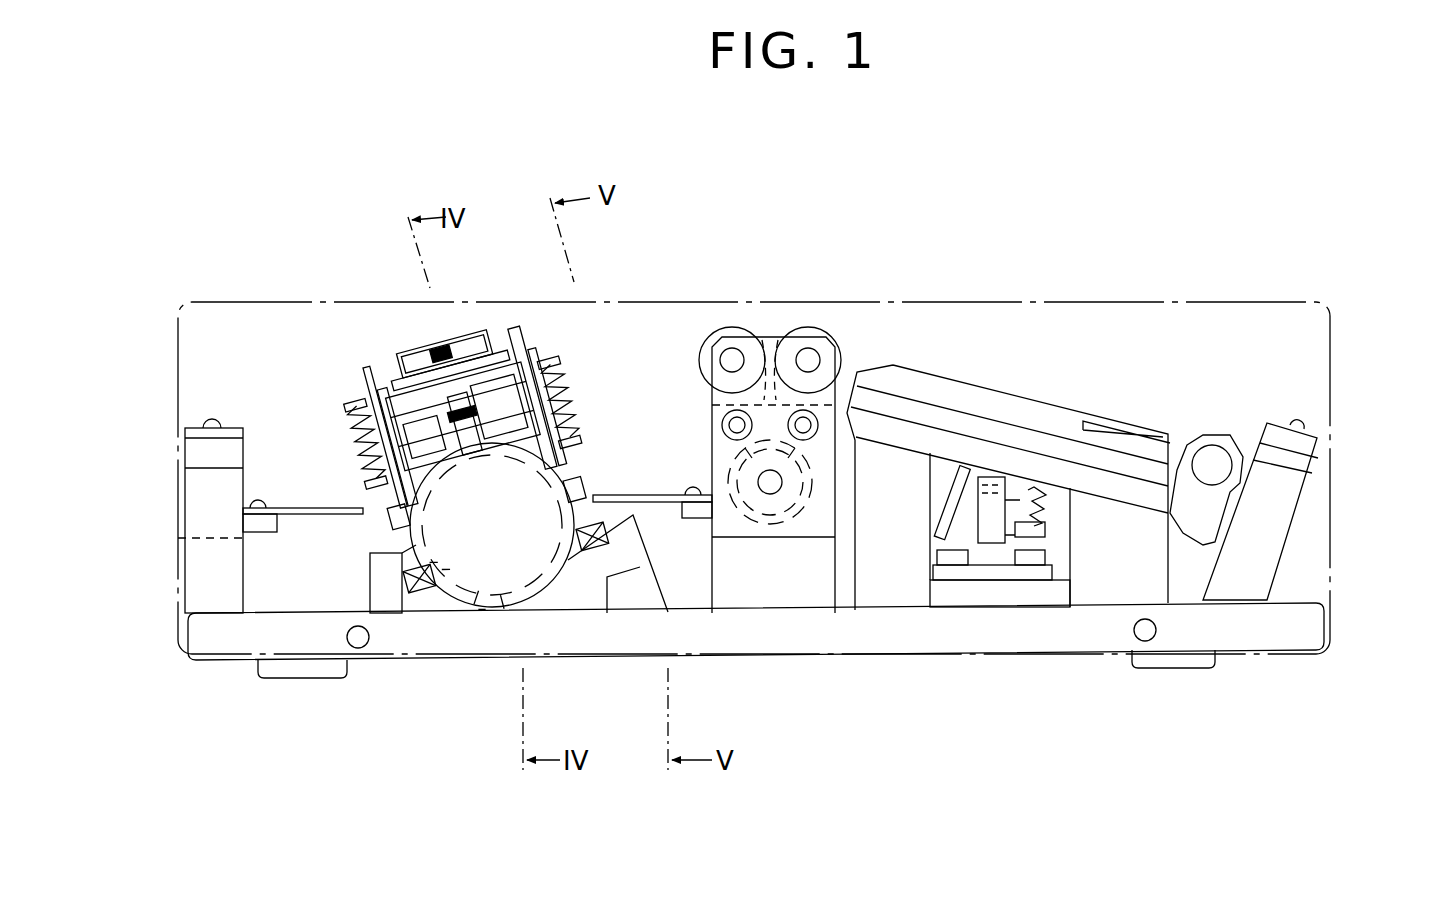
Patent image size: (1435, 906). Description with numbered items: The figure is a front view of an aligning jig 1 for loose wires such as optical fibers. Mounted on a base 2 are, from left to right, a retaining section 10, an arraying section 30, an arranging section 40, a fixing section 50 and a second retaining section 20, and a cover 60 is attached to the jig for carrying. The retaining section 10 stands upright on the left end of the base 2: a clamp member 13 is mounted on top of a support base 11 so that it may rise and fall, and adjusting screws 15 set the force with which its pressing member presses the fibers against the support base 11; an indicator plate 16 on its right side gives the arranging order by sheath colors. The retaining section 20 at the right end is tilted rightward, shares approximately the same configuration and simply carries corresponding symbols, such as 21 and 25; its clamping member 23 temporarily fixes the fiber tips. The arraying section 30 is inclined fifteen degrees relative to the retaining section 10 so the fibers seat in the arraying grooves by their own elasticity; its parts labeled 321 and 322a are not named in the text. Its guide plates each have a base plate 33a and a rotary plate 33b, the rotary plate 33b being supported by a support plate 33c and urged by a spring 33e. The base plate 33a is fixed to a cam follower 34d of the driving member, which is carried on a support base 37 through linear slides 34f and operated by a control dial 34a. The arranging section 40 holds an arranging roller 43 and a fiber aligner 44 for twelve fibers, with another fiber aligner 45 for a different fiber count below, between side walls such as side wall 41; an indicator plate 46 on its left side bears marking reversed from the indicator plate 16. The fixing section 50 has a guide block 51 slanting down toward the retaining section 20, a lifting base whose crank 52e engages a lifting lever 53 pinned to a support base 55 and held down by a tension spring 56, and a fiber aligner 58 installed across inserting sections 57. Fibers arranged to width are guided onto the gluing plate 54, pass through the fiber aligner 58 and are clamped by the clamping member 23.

The aligning jig 1 is at (811, 243).
The base 2 is at (778, 648).
The retaining section 10 is at (270, 480).
The support base 11 is at (237, 585).
The clamp member 13 is at (243, 445).
The adjusting screws 15 is at (211, 424).
The indicator plate 16 is at (278, 504).
The retaining section 20 is at (1295, 469).
The arm 21 is at (1266, 511).
The clamping member 23 is at (1306, 466).
The projection 25 is at (1297, 424).
The arraying section 30 is at (468, 480).
The plate 321 is at (450, 370).
The block 322a is at (444, 354).
The base plate 33a is at (463, 423).
The rotary plate 33b is at (469, 415).
The support plate 33c is at (486, 503).
The spring 33e is at (463, 421).
The control dial 34a is at (492, 526).
The cam follower 34d is at (491, 524).
The linear slides 34f is at (506, 557).
The support base 37 is at (578, 600).
The arranging section 40 is at (774, 414).
The side wall 41 is at (770, 338).
The arranging roller 43 is at (702, 345).
The fiber aligner 44 is at (848, 358).
The fiber aligner 45 is at (800, 450).
The indicator plate 46 is at (654, 494).
The fixing section 50 is at (1060, 507).
The guide block 51 is at (1108, 430).
The crank 52e is at (935, 530).
The lifting lever 53 is at (985, 542).
The gluing plate 54 is at (978, 392).
The support base 55 is at (1020, 576).
The tension spring 56 is at (1040, 510).
The inserting sections 57 is at (1203, 547).
The fiber aligner 58 is at (1212, 455).
The cover 60 is at (950, 300).